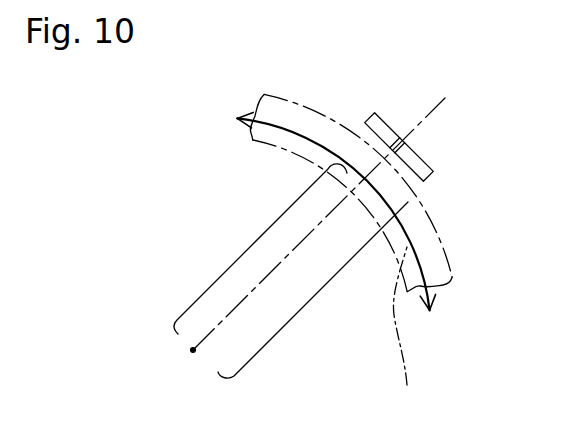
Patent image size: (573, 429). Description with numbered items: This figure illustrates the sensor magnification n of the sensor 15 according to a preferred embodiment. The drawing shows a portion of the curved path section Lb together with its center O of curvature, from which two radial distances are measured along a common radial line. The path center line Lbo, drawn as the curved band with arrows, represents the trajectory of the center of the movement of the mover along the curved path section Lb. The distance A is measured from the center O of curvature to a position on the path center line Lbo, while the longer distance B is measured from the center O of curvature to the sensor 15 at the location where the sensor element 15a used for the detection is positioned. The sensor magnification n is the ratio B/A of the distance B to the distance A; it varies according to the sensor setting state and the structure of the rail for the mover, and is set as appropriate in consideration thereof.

The sensor 15 is at (382, 112).
The sensor element 15a is at (399, 144).
The distance from center of curvature to path center line A is at (248, 248).
The distance from center of curvature to sensor B is at (327, 278).
The path center line Lbo is at (329, 149).
The curved path section Lb is at (406, 331).